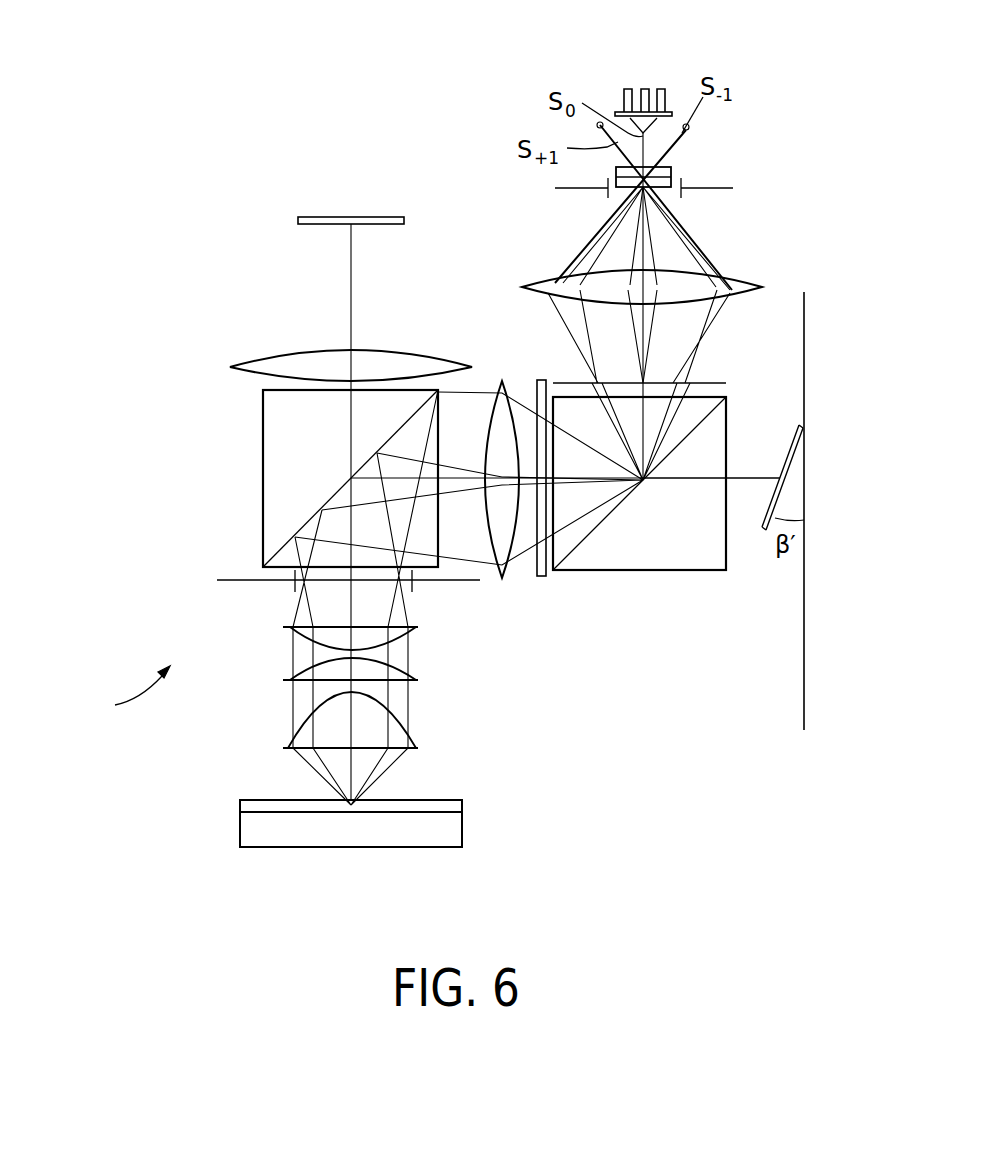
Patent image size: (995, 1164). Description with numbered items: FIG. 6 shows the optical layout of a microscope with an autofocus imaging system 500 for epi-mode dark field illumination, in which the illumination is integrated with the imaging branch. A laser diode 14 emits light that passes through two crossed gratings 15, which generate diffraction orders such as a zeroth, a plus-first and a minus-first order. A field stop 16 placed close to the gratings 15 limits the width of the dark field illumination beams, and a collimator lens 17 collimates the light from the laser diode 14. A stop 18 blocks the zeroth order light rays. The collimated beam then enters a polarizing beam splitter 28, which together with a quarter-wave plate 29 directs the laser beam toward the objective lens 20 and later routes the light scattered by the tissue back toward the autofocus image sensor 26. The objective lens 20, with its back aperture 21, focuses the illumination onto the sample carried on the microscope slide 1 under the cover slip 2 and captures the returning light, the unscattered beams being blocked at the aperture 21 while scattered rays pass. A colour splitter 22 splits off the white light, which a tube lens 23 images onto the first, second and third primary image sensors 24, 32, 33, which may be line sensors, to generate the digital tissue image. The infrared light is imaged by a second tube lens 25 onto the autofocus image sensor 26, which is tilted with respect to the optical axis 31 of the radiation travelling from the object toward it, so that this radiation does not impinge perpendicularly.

The microscope slide 1 is at (305, 845).
The cover slip 2 is at (240, 805).
The laser diode 14 is at (626, 88).
The two crossed gratings 15 is at (672, 177).
The field stop 16 is at (733, 188).
The collimator lens 17 is at (748, 287).
The stop for blocking 0th order light rays 18 is at (683, 383).
The objective lens 20 is at (300, 636).
The back aperture 21 is at (228, 578).
The colour splitter 22 is at (263, 440).
The tube lens 23 is at (255, 358).
The first primary image sensor 24 is at (313, 217).
The tube lens 25 is at (497, 580).
The autofocus image sensor 26 is at (798, 424).
The polarizing beam splitter 28 is at (660, 570).
The quarter-wave plate 29 is at (540, 578).
The optical axis 31 is at (707, 478).
The second primary image sensor 32 is at (333, 185).
The third primary image sensor 33 is at (333, 185).
The autofocus imaging system 500 is at (128, 737).